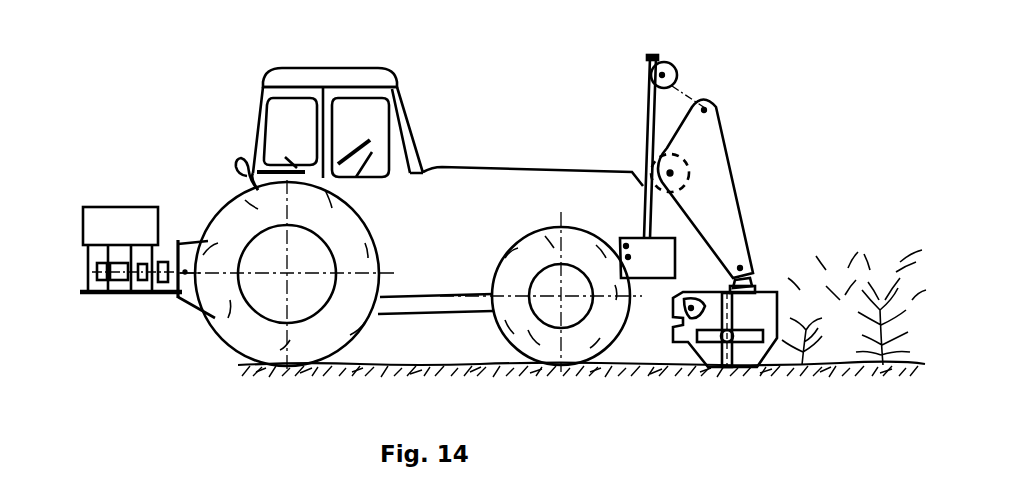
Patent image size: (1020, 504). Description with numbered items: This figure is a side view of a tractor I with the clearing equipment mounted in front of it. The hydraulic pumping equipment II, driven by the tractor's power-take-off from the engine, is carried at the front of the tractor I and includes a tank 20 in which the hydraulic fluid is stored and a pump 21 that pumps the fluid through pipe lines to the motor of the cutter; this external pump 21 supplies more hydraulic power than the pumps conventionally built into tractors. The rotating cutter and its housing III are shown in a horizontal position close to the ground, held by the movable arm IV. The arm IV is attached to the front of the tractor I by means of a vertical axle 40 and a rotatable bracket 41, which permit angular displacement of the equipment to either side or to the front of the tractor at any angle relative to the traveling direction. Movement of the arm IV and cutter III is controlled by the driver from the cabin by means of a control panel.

The tractor I is at (452, 157).
The hydraulic pumping equipment II is at (118, 250).
The rotating cutter and its housing III is at (735, 373).
The movable arm IV is at (732, 148).
The tank 20 is at (105, 215).
The pump 21 is at (114, 320).
The vertical axle 40 is at (652, 102).
The rotatable bracket 41 is at (670, 70).